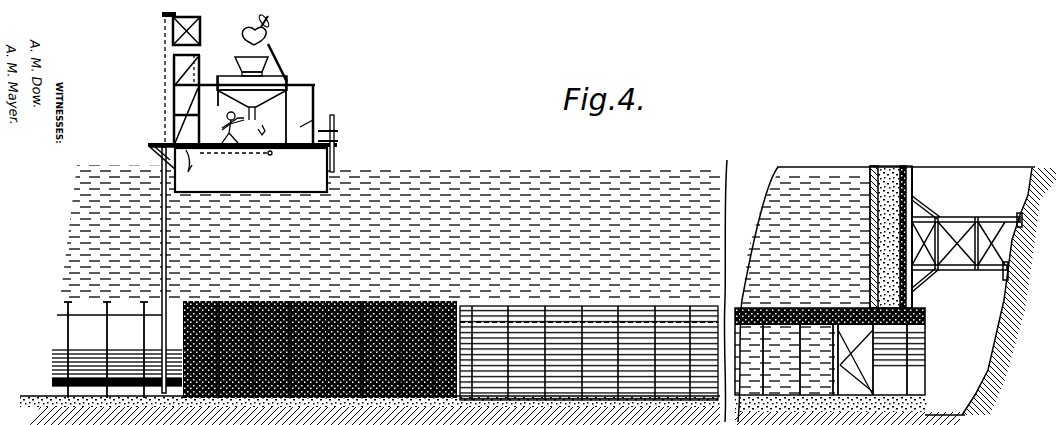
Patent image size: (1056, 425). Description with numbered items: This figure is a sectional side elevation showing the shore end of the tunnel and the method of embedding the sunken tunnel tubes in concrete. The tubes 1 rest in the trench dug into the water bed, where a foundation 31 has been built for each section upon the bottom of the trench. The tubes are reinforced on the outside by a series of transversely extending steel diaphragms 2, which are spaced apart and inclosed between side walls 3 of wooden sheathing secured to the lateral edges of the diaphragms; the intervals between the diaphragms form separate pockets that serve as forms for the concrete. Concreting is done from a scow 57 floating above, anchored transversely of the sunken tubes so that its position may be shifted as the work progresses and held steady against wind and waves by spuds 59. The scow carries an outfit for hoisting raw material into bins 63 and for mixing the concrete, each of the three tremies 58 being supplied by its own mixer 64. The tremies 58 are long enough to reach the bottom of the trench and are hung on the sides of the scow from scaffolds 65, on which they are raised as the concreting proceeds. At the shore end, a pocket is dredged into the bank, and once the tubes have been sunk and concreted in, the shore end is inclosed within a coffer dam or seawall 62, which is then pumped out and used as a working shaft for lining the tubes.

The tube 1 is at (55, 339).
The diaphragm 2 is at (145, 333).
The side wall 3 is at (750, 291).
The foundation 31 is at (36, 388).
The scow 57 is at (251, 170).
The tremie 58 is at (160, 196).
The spud 59 is at (335, 143).
The coffer dam or seawall 62 is at (889, 166).
The bin 63 is at (256, 95).
The mixer 64 is at (270, 125).
The scaffold 65 is at (173, 62).